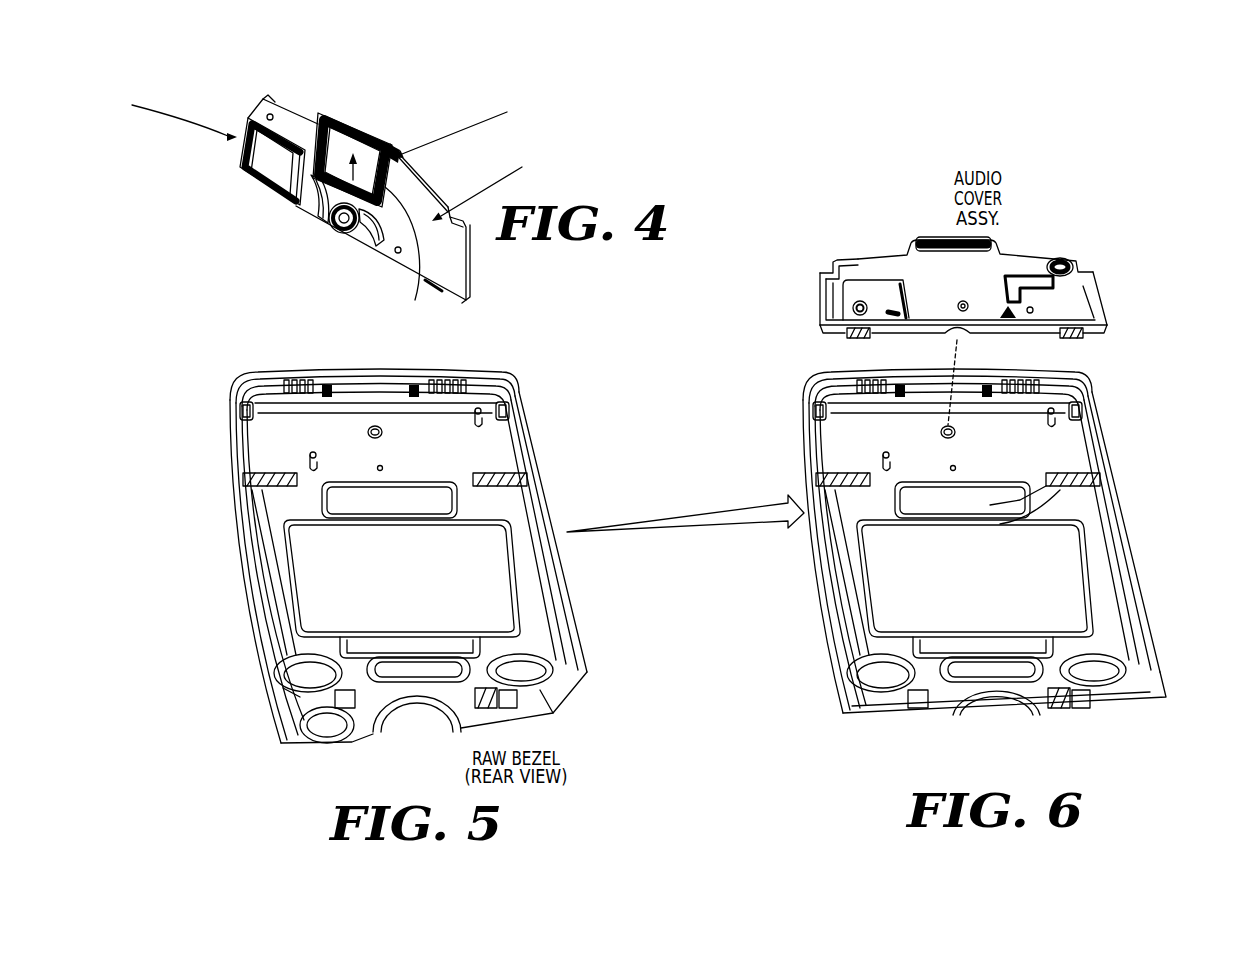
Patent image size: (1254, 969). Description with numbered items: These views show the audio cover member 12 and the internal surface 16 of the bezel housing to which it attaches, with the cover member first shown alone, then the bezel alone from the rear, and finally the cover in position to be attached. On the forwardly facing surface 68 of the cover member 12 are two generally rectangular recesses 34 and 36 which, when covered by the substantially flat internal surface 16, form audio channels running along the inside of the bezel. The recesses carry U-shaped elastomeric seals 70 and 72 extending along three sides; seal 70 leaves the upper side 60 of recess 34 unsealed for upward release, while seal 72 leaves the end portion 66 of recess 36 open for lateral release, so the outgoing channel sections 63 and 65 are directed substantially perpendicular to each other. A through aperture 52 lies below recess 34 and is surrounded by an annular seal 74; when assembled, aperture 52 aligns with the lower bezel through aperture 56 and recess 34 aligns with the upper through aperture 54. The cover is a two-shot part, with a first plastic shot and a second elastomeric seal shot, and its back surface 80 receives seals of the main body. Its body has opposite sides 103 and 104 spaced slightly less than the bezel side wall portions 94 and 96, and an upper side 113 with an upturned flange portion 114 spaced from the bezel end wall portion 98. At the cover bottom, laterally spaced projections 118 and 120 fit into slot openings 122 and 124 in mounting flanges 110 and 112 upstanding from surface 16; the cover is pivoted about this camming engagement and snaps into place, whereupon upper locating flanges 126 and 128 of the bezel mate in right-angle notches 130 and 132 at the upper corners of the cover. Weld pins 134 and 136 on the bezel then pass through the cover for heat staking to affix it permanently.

In FIG. 4, the audio cover member 12 is at (476, 88).
In FIG. 6, the audio cover member 12 is at (1089, 198).
In FIG. 5, the internal surface 16 is at (510, 446).
In FIG. 4, the recess 34 is at (340, 137).
In FIG. 4, the recess 36 is at (260, 155).
In FIG. 4, the through aperture 52 is at (343, 233).
In FIG. 5, the through aperture 54 is at (377, 426).
In FIG. 5, the through aperture 56 is at (378, 466).
In FIG. 4, the upper side 60 is at (357, 127).
In FIG. 4, the outgoing channel section 63 is at (415, 299).
In FIG. 4, the outgoing channel section 65 is at (285, 161).
In FIG. 4, the unsealed end portion 66 is at (244, 139).
In FIG. 4, the forwardly facing surface 68 is at (407, 205).
In FIG. 4, the seal 70 is at (317, 115).
In FIG. 4, the seal 72 is at (272, 195).
In FIG. 4, the annular seal 74 is at (332, 226).
In FIG. 6, the back surface 80 is at (1093, 288).
In FIG. 5, the side wall portion 94 is at (238, 525).
In FIG. 6, the side wall portion 94 is at (800, 533).
In FIG. 5, the side wall portion 96 is at (548, 492).
In FIG. 6, the side wall portion 96 is at (1143, 592).
In FIG. 5, the end wall portion 98 is at (410, 374).
In FIG. 4, the side 103 is at (467, 257).
In FIG. 6, the side 103 is at (818, 300).
In FIG. 4, the side 104 is at (250, 108).
In FIG. 6, the side 104 is at (1112, 314).
In FIG. 6, the flange 110 is at (798, 480).
In FIG. 6, the flange 112 is at (1092, 488).
In FIG. 6, the upper side 113 is at (1026, 246).
In FIG. 4, the flange portion 114 is at (399, 148).
In FIG. 6, the flange portion 114 is at (930, 237).
In FIG. 6, the projection 118 is at (848, 338).
In FIG. 6, the projection 120 is at (1078, 337).
In FIG. 6, the slot opening 122 is at (850, 490).
In FIG. 6, the slot opening 124 is at (1068, 487).
In FIG. 5, the upper locating flange 126 is at (232, 410).
In FIG. 5, the upper locating flange 128 is at (503, 408).
In FIG. 6, the notch 130 is at (827, 268).
In FIG. 6, the notch 132 is at (1080, 265).
In FIG. 6, the weld pin 134 is at (880, 460).
In FIG. 6, the weld pin 136 is at (1060, 438).